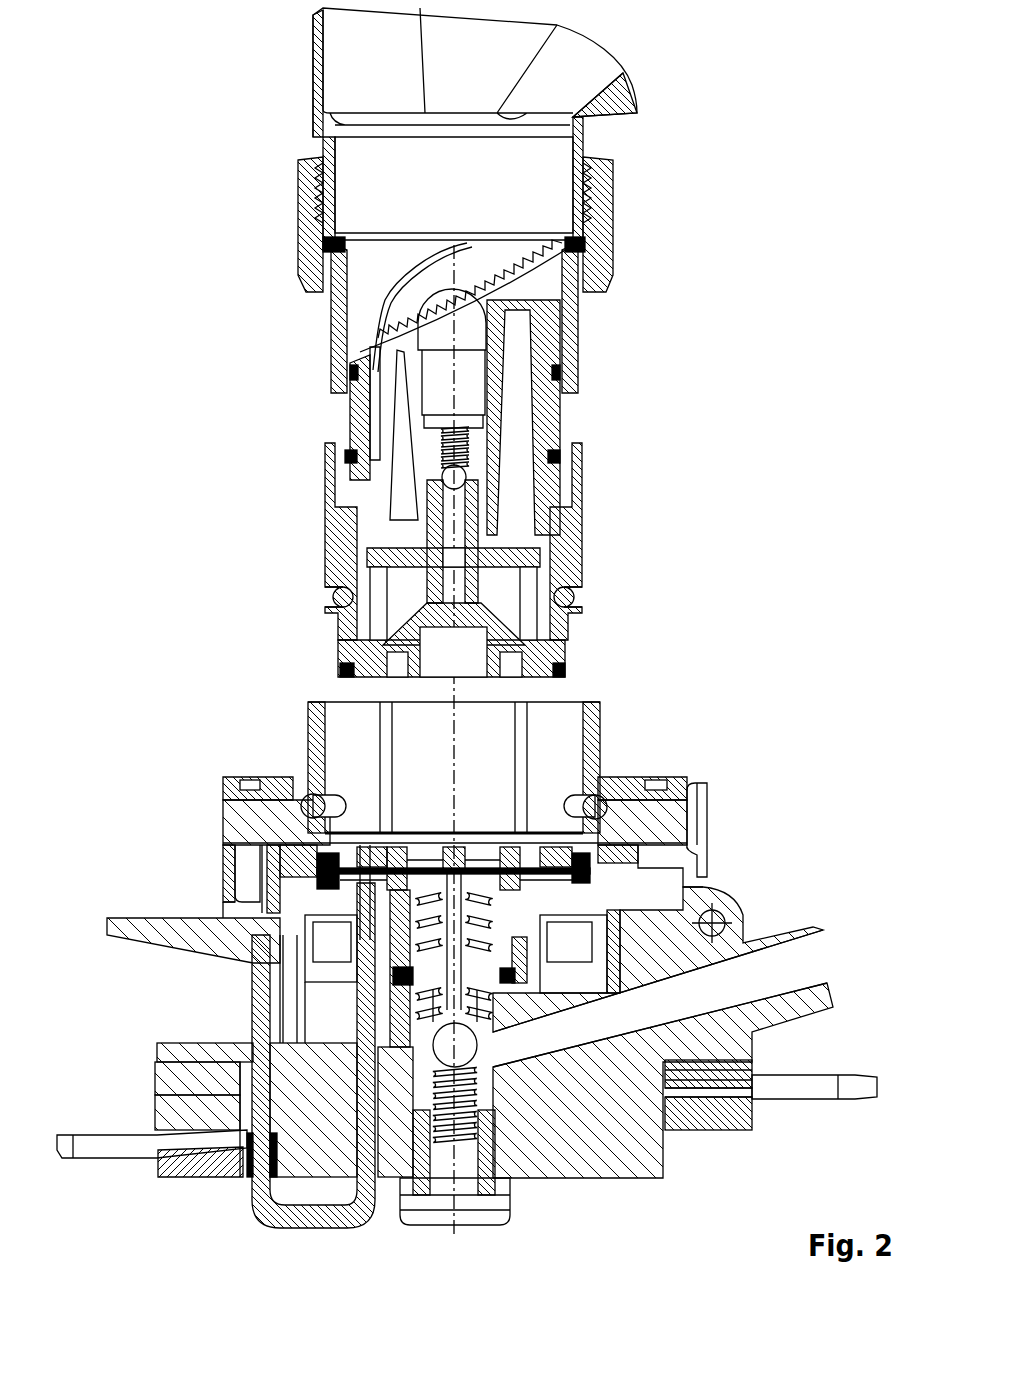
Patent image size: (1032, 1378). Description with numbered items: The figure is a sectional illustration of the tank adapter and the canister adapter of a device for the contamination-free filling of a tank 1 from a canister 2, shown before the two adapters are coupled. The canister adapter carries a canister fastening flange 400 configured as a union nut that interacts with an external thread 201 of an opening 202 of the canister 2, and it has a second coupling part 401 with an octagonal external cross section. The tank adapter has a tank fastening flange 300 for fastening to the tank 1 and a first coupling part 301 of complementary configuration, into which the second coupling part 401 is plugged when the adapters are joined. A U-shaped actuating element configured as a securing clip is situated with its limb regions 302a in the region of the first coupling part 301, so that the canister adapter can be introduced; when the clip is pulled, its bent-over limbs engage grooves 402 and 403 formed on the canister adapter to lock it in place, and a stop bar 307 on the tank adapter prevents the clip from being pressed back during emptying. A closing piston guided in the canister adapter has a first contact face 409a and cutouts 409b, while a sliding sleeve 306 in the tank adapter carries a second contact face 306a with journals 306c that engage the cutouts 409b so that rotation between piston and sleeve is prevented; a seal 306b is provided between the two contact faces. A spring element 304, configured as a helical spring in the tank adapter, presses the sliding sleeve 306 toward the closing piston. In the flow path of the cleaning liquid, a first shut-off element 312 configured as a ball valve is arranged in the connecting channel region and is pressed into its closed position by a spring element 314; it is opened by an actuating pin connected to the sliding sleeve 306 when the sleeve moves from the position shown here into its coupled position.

The tank 1 is at (855, 1085).
The canister 2 is at (577, 70).
The external thread 201 is at (597, 186).
The opening 202 is at (428, 187).
The tank fastening flange 300 is at (222, 1050).
The first coupling part 301 is at (597, 722).
The limb regions 302a is at (313, 803).
The spring element 304 is at (413, 917).
The sliding sleeve 306 is at (620, 870).
The second contact face 306a is at (325, 885).
The seal 306b is at (385, 873).
The journals 306c is at (560, 848).
The stop bar 307 is at (697, 800).
The first shut-off element 312 is at (460, 1060).
The spring element 314 is at (452, 1100).
The canister fastening flange 400 is at (600, 246).
The second coupling part 401 is at (580, 532).
The groove 402 is at (335, 597).
The groove 403 is at (583, 598).
The first contact face 409a is at (385, 677).
The cutouts 409b is at (510, 665).